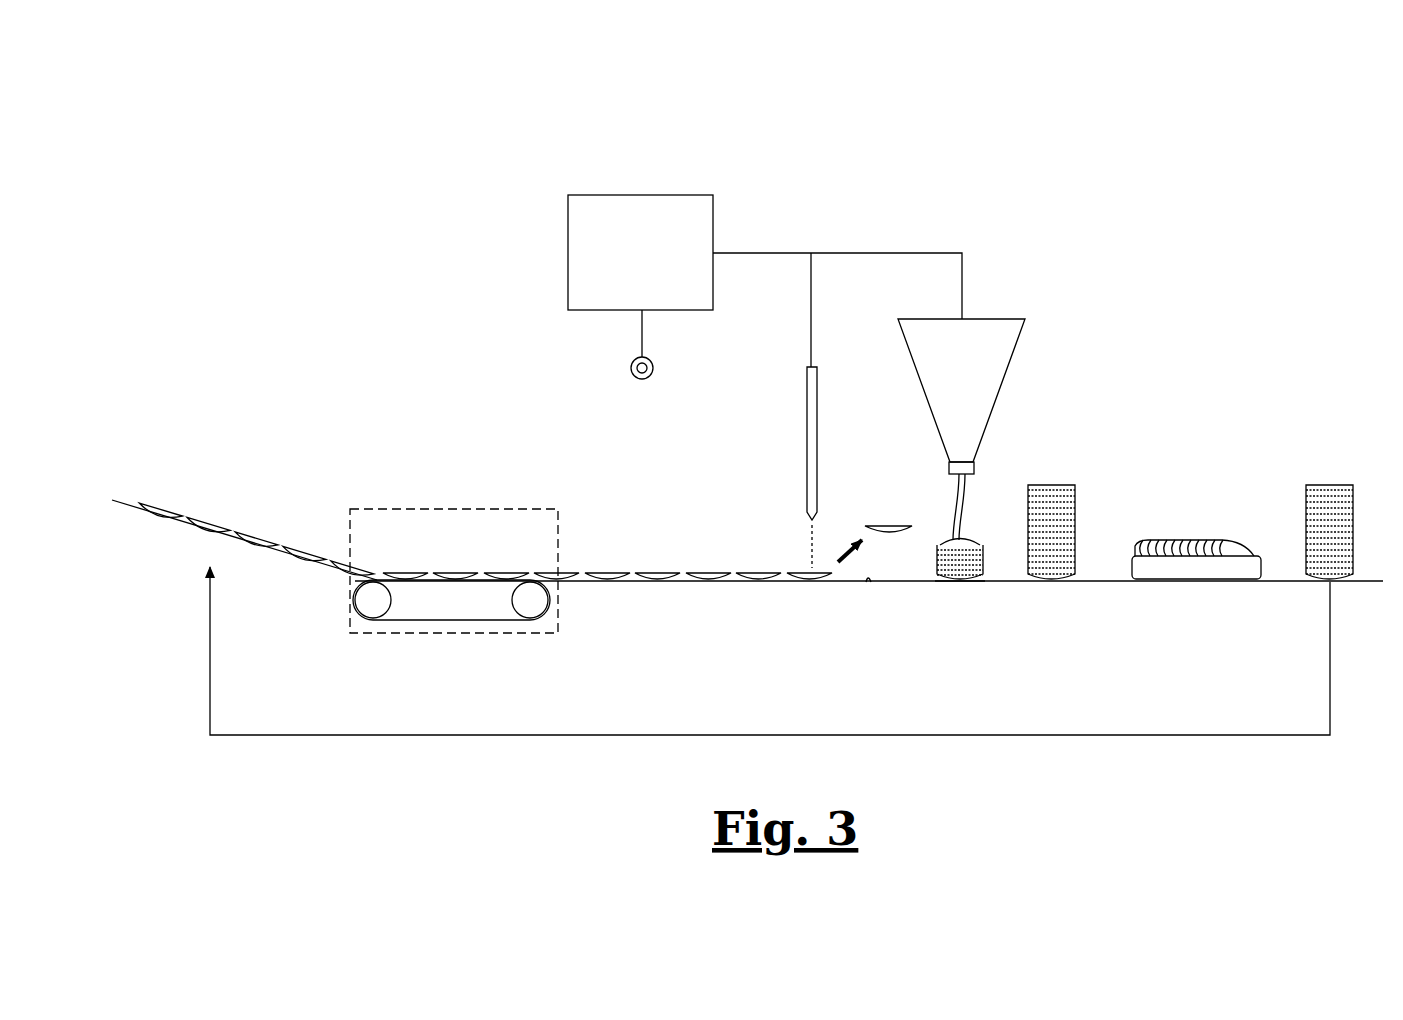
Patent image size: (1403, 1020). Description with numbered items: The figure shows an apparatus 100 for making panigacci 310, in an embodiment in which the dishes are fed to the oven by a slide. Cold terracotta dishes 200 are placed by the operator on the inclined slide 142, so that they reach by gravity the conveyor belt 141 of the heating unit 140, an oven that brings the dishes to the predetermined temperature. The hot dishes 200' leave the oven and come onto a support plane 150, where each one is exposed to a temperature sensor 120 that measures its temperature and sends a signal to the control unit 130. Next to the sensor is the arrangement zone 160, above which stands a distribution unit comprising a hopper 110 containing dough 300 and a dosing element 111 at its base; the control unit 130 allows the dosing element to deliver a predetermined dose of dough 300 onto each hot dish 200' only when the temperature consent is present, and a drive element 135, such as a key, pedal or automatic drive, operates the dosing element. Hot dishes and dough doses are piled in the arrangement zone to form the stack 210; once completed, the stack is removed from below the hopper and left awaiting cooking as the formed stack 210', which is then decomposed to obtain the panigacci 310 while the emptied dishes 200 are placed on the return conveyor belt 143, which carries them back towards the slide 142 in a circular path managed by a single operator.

The apparatus 100 is at (1055, 165).
The hopper 110 is at (1005, 378).
The dosing element 111 is at (975, 467).
The temperature sensor 120 is at (806, 438).
The control unit 130 is at (637, 215).
The drive element 135 is at (628, 368).
The heating unit 140 is at (473, 405).
The conveyor belt 141 is at (427, 617).
The slide 142 is at (230, 540).
The conveyor belt 143 is at (527, 737).
The support plane 150 is at (870, 583).
The arrangement zone 160 is at (959, 586).
The terracotta dishes 200 is at (765, 452).
The hot dishes 200' is at (647, 513).
The stack 210 is at (979, 539).
The formed stack 210' is at (1094, 509).
The dough 300 is at (950, 541).
The panigacci 310 is at (1189, 517).